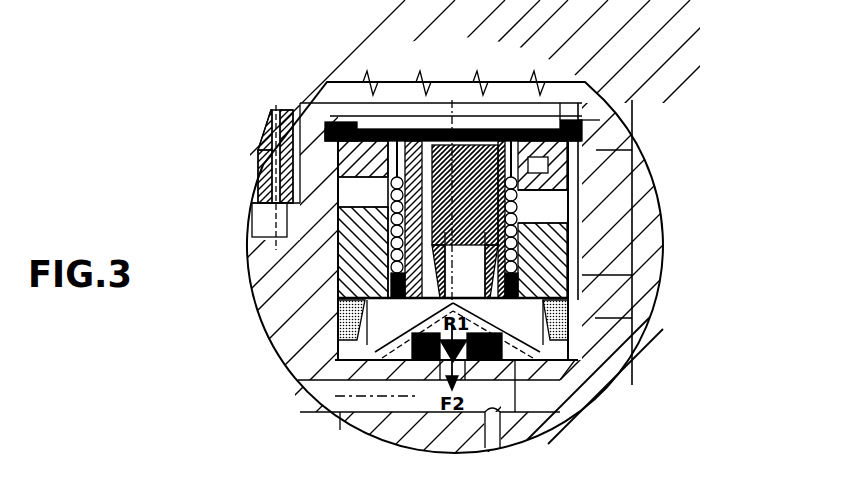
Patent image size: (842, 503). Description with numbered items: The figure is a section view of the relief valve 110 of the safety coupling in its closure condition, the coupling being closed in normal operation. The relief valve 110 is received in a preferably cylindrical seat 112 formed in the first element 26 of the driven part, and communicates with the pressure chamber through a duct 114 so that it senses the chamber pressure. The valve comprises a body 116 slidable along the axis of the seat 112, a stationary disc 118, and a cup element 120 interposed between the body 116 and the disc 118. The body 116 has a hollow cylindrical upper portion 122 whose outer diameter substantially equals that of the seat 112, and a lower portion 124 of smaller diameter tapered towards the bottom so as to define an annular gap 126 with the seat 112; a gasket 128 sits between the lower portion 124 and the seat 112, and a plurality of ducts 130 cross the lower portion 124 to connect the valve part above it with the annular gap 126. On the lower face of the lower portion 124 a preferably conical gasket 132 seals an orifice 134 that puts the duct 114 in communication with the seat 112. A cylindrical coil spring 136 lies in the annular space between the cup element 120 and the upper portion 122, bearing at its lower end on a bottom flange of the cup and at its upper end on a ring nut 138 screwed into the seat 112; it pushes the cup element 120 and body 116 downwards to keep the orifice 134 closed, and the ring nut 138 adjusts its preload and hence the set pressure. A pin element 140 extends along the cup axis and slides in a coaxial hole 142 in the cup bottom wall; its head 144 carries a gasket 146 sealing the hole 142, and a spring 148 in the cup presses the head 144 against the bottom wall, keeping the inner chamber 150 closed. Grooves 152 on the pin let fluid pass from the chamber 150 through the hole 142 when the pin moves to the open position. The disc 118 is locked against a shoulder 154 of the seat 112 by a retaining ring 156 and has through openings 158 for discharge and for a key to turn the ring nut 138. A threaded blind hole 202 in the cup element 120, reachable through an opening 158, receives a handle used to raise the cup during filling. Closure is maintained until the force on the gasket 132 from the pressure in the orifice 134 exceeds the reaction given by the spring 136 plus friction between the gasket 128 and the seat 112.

The first element 26 is at (616, 355).
The relief valve 110 is at (582, 245).
The seat 112 is at (353, 167).
The duct 114 is at (373, 408).
The body 116 is at (565, 338).
The stationary disc 118 is at (510, 125).
The cup element 120 is at (575, 207).
The upper portion 122 is at (340, 287).
The lower portion 124 is at (527, 360).
The annular gap 126 is at (580, 392).
The gasket 128 is at (618, 318).
The ducts 130 is at (335, 412).
The gasket 132 is at (443, 360).
The orifice 134 is at (492, 412).
The spring 136 is at (585, 275).
The ring nut 138 is at (612, 190).
The pin element 140 is at (450, 100).
The hole 142 is at (542, 160).
The head 144 is at (578, 215).
The gasket 146 is at (345, 270).
The spring 148 is at (365, 300).
The inner chamber 150 is at (360, 340).
The grooves 152 is at (410, 175).
The shoulder 154 is at (590, 138).
The retaining ring 156 is at (582, 138).
The through openings 158 is at (350, 165).
The threaded blind hole 202 is at (272, 212).